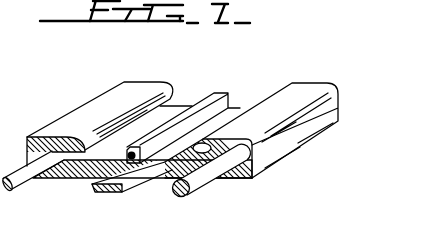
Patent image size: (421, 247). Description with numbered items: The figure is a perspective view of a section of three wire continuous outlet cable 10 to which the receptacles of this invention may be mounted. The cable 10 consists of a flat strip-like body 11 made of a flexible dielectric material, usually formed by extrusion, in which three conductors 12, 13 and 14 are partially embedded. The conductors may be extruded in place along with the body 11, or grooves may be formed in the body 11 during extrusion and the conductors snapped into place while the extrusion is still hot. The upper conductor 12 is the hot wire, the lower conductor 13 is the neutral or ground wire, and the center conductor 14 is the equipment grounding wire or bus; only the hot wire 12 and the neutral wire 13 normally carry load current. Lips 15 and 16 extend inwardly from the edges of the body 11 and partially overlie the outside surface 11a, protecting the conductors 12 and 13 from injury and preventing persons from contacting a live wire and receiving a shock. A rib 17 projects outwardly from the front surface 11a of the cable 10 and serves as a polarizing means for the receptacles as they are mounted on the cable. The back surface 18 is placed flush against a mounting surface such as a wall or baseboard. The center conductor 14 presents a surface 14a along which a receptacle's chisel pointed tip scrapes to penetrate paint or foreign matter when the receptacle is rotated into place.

The three wire cable 10 is at (69, 97).
The strip-like body 11 is at (72, 178).
The outside surface 11a is at (187, 99).
The upper conductor 12 is at (23, 190).
The lower conductor 13 is at (195, 189).
The center conductor 14 is at (133, 189).
The surface of equipment grounding conductor 14a is at (100, 193).
The lip 15 is at (77, 143).
The lip 16 is at (233, 137).
The rib 17 is at (125, 151).
The back surface 18 is at (160, 180).